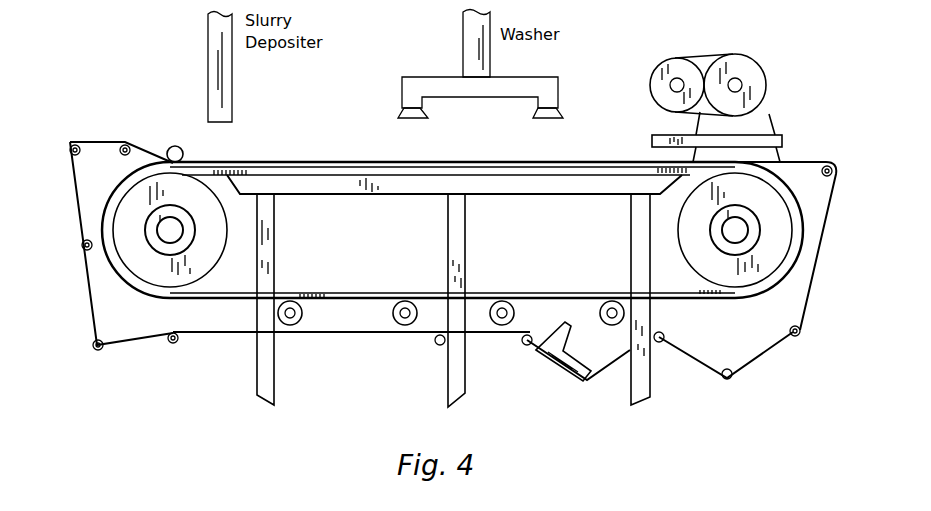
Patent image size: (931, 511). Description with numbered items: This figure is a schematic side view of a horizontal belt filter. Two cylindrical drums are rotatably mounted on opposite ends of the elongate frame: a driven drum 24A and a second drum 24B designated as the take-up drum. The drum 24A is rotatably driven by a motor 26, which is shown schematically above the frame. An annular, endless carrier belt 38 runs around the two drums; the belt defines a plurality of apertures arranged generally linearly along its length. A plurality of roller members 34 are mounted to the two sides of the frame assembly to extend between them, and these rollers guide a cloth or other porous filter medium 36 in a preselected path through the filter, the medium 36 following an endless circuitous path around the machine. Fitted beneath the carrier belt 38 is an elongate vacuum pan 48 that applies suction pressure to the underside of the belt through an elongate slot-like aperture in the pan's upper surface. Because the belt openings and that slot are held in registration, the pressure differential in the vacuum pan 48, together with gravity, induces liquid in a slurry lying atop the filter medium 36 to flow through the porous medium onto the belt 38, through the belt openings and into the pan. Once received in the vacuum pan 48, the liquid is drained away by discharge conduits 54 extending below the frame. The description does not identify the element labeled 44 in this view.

The drum 24A is at (732, 275).
The take-up drum 24B is at (200, 197).
The motor 26 is at (757, 75).
The roller members 34 is at (84, 241).
The filter medium 36 is at (762, 362).
The carrier belt 38 is at (320, 165).
The side frame plate 44 is at (90, 300).
The vacuum pan 48 is at (590, 185).
The discharge conduits 54 is at (258, 374).